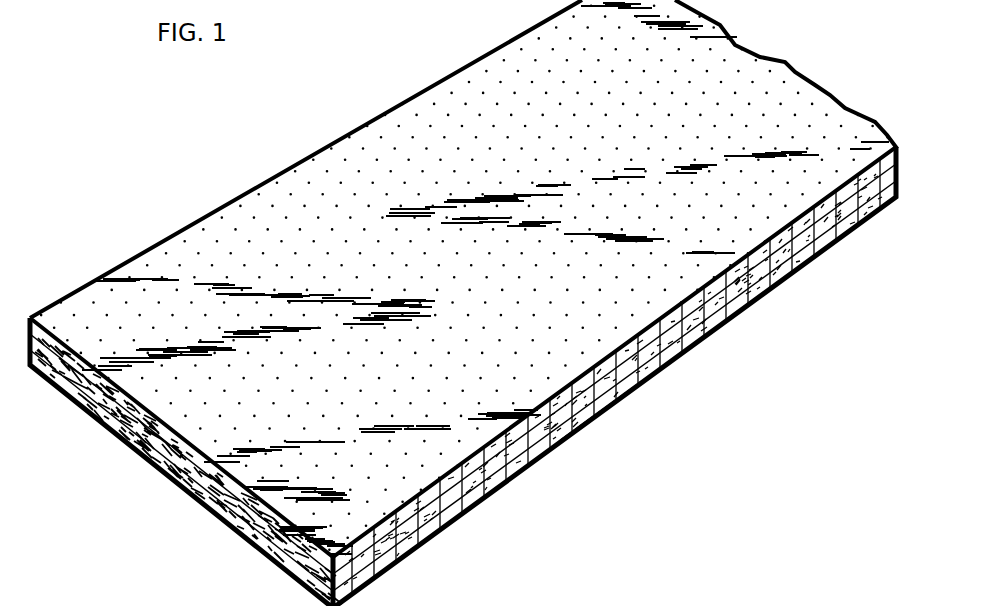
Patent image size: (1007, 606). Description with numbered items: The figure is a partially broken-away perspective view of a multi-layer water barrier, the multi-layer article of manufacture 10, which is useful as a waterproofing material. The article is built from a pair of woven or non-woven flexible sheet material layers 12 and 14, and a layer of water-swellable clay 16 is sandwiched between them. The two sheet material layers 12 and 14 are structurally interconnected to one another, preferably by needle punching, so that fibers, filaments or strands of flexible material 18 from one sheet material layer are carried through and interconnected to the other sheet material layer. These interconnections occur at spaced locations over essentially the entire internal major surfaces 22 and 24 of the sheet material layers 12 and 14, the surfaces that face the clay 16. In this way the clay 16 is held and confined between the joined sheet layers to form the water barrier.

The multi-layer article of manufacture 10 is at (166, 180).
The flexible sheet material layer 12 is at (463, 250).
The flexible sheet material layer 14 is at (428, 527).
The layer of water-swellable clay 16 is at (490, 487).
The fibers, filaments or strands of flexible material 18 is at (622, 400).
The internal major surface 22 is at (773, 293).
The internal major surface 24 is at (705, 337).